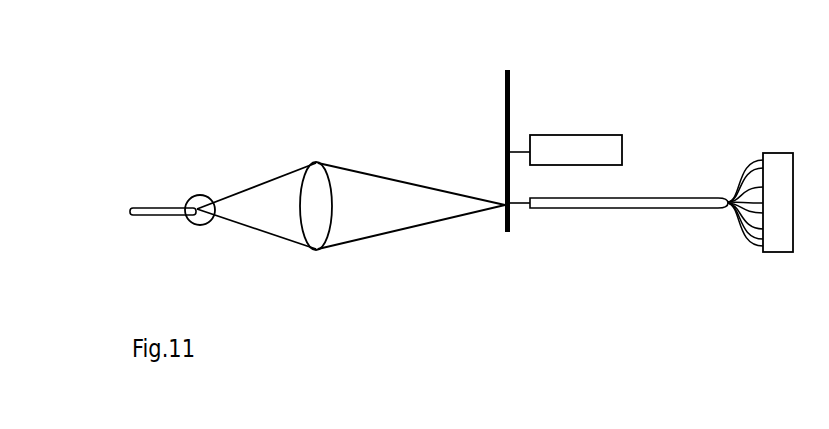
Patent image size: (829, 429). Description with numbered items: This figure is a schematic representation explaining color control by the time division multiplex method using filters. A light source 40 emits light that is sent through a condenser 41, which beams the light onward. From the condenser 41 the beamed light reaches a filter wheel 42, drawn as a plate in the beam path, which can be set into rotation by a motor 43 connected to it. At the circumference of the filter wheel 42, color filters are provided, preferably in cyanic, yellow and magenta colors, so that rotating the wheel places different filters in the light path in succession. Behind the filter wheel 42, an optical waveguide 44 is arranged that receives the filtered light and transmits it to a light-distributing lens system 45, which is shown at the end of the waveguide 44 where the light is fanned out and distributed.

The light source 40 is at (197, 195).
The condenser 41 is at (315, 160).
The filter wheel 42 is at (507, 70).
The motor 43 is at (580, 145).
The optical waveguide 44 is at (655, 195).
The light-distributing lens system 45 is at (775, 165).